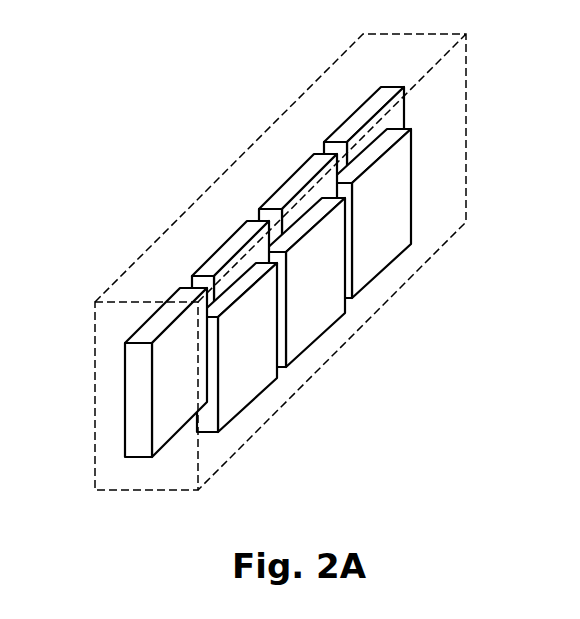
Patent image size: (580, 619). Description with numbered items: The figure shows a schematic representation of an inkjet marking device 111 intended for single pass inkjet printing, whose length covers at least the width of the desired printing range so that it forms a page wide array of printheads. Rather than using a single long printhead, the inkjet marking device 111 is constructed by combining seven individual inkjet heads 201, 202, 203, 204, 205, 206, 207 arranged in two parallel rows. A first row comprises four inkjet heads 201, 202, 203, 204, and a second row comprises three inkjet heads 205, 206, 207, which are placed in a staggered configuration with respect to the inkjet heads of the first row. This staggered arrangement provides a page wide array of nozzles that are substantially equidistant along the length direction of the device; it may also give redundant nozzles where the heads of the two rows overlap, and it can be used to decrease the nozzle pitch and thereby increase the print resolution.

The inkjet marking device 111 is at (368, 352).
The inkjet head 201 is at (150, 322).
The inkjet head 202 is at (220, 258).
The inkjet head 203 is at (298, 177).
The inkjet head 204 is at (368, 110).
The inkjet head 205 is at (243, 396).
The inkjet head 206 is at (322, 282).
The inkjet head 207 is at (385, 207).